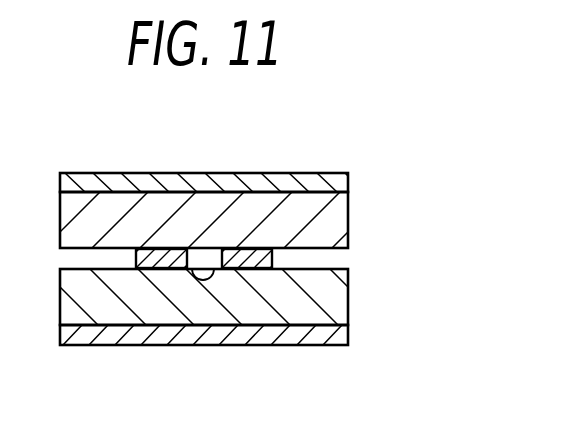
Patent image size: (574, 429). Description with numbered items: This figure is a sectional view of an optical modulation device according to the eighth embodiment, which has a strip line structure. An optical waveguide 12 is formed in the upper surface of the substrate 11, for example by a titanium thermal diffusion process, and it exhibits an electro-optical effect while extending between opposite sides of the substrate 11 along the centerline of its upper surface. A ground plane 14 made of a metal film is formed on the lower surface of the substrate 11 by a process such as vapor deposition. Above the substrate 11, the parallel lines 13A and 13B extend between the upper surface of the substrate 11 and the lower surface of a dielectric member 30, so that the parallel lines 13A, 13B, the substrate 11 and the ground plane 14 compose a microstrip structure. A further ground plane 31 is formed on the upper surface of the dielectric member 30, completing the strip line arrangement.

The dielectric member 30 is at (332, 224).
The ground plane 31 is at (322, 173).
The substrate 11 is at (337, 308).
The ground plane 14 is at (272, 346).
The parallel line 13A is at (165, 262).
The parallel line 13B is at (251, 262).
The optical waveguide 12 is at (203, 272).